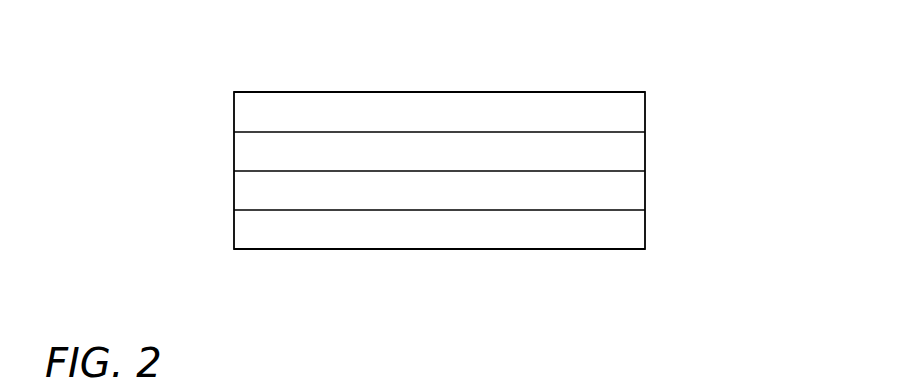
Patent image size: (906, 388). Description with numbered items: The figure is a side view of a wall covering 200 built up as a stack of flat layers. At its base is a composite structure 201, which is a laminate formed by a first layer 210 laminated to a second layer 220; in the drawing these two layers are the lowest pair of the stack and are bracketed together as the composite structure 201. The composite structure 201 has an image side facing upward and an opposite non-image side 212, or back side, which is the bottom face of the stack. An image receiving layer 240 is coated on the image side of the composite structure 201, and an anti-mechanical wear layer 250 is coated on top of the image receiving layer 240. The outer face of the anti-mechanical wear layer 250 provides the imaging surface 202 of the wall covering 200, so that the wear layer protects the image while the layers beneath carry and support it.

The wall covering 200 is at (686, 44).
The composite structure 201 is at (213, 171).
The imaging surface 202 is at (246, 74).
The first layer 210 is at (648, 229).
The second layer 220 is at (648, 190).
The image receiving layer 240 is at (648, 151).
The anti-mechanical wear layer 250 is at (648, 111).
The non-image side 212 is at (248, 270).